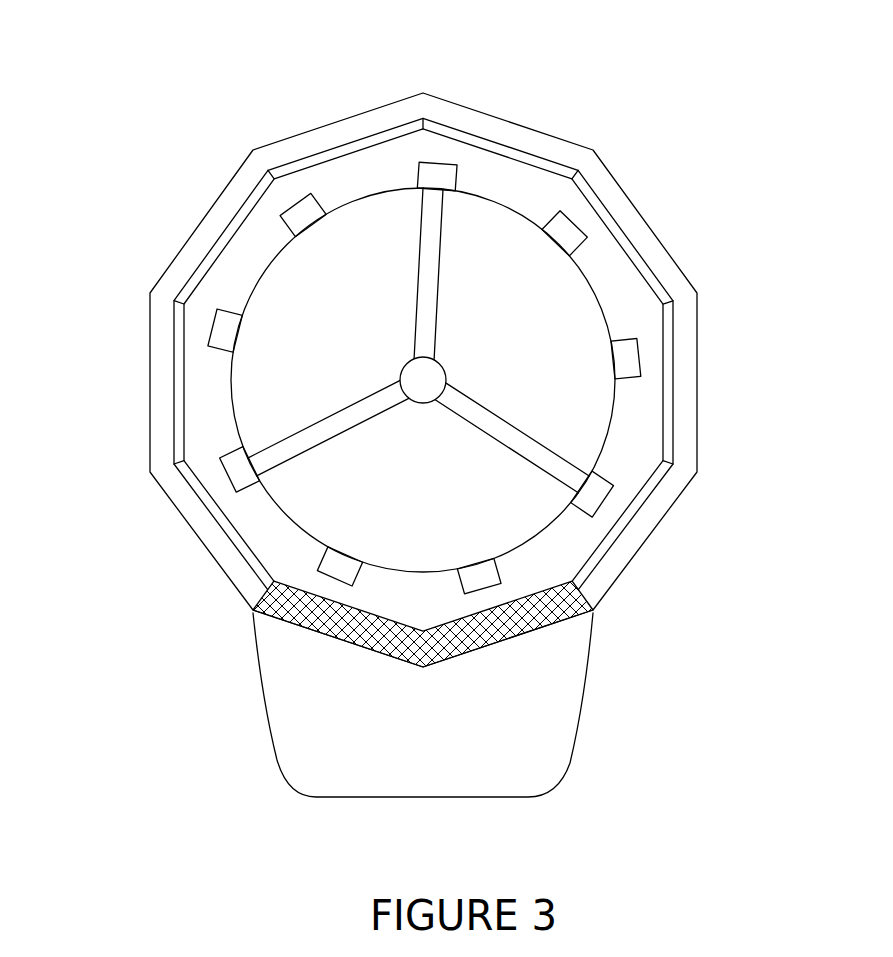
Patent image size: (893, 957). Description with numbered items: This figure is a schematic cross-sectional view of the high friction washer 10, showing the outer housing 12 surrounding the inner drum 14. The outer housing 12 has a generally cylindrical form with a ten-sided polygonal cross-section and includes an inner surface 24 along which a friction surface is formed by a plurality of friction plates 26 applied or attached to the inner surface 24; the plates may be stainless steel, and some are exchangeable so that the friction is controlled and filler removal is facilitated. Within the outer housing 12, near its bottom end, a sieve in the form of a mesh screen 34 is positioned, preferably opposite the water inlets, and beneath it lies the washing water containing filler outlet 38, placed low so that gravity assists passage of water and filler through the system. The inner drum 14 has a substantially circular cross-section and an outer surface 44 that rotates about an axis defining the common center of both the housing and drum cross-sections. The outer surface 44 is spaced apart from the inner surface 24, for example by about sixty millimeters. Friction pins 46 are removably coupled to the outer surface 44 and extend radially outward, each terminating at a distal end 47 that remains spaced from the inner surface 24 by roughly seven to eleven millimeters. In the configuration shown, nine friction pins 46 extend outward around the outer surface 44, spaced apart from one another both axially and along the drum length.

The high friction washer 10 is at (116, 66).
The outer housing 12 is at (632, 180).
The inner drum 14 is at (216, 388).
The inner surface 24 is at (645, 281).
The friction plates 26 is at (638, 258).
The mesh screen 34 is at (342, 658).
The washing water containing filler outlet 38 is at (240, 710).
The outer surface 44 is at (380, 192).
The friction pins 46 is at (287, 227).
The distal end 47 is at (290, 202).